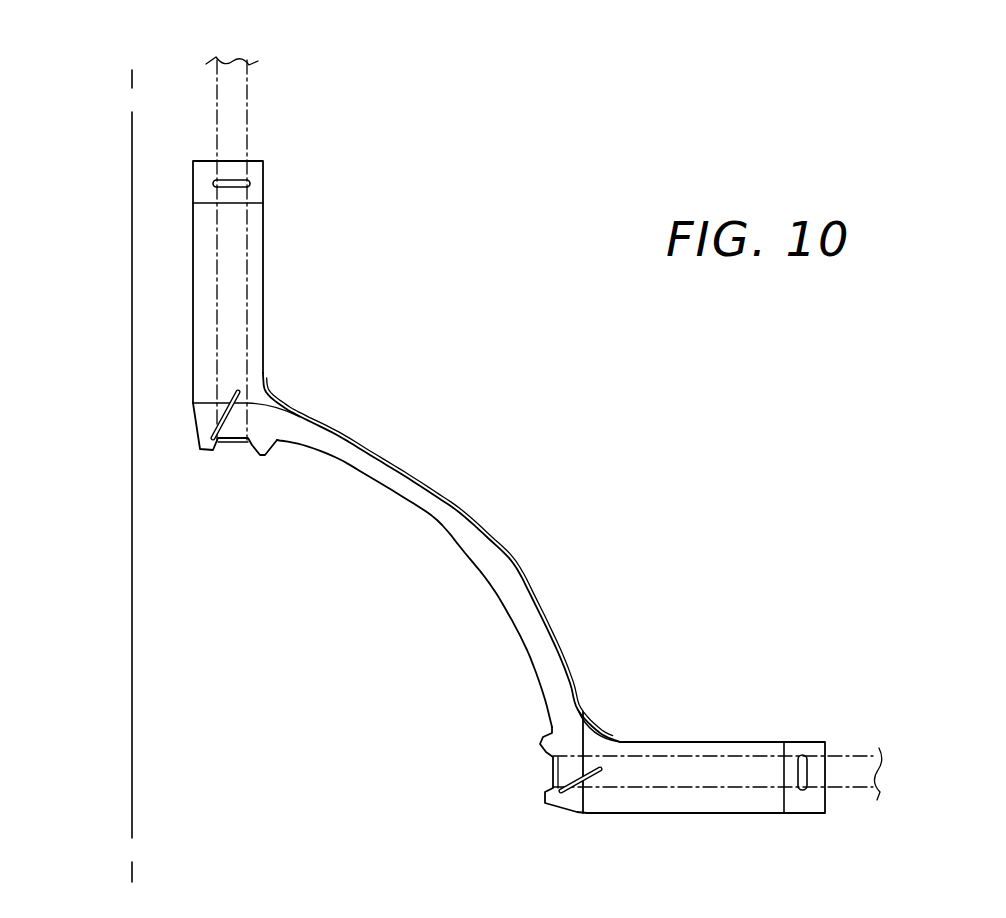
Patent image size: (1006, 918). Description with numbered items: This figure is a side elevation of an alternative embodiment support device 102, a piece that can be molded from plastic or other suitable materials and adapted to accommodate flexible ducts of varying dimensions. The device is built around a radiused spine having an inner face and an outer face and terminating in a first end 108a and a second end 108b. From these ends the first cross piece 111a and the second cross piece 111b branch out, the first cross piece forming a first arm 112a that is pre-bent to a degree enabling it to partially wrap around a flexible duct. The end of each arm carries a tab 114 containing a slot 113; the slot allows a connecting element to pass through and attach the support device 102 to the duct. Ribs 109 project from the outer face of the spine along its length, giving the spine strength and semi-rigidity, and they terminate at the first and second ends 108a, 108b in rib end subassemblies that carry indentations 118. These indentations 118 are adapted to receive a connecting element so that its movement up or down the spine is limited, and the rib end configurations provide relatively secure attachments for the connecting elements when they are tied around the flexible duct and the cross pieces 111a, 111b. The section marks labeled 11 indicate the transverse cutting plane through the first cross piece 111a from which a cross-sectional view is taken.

The section line 11- 11 is at (316, 132).
The support device 102 is at (480, 604).
The first end 108a is at (170, 423).
The second end 108b is at (563, 833).
The ribs 109 is at (440, 523).
The first cross piece 111a is at (282, 282).
The second cross piece 111b is at (765, 706).
The first arm 112a is at (263, 318).
The slot 113 is at (250, 183).
The tab 114 is at (263, 193).
The indentations 118 is at (250, 447).